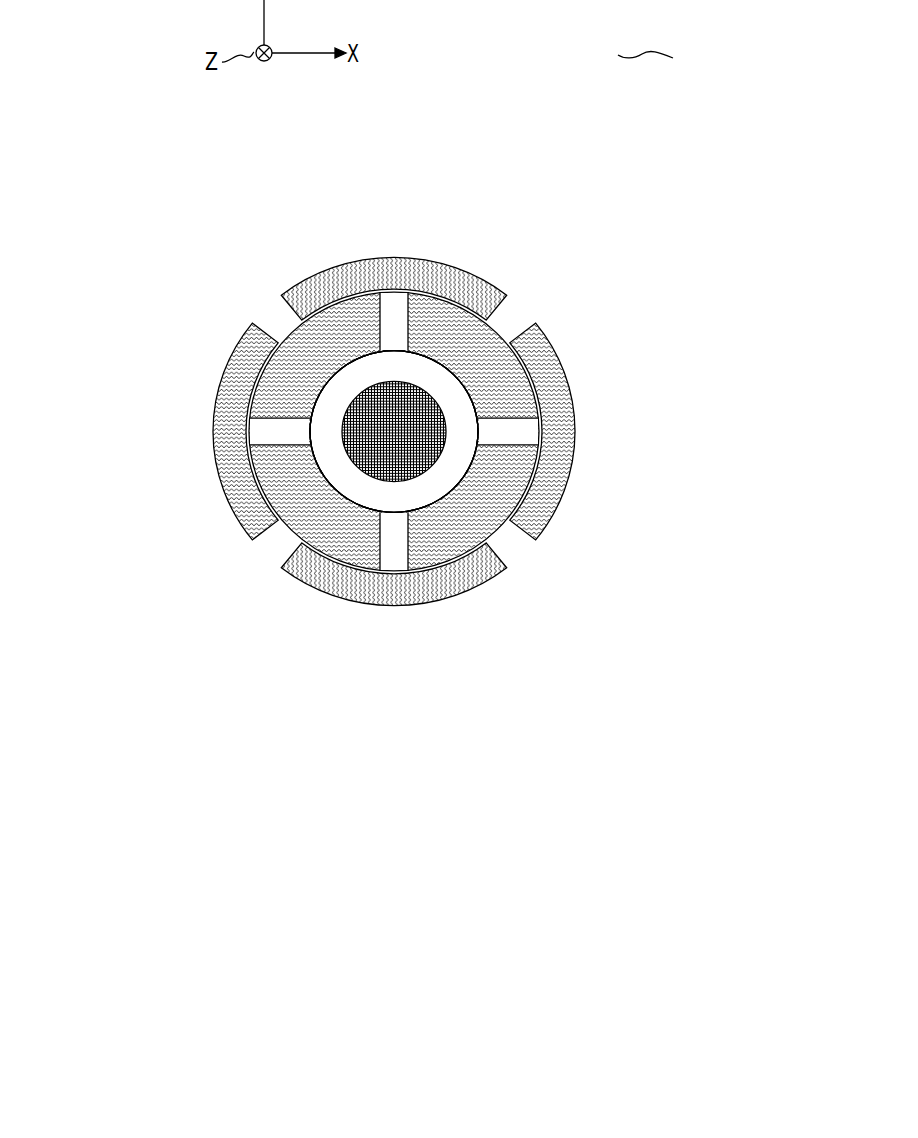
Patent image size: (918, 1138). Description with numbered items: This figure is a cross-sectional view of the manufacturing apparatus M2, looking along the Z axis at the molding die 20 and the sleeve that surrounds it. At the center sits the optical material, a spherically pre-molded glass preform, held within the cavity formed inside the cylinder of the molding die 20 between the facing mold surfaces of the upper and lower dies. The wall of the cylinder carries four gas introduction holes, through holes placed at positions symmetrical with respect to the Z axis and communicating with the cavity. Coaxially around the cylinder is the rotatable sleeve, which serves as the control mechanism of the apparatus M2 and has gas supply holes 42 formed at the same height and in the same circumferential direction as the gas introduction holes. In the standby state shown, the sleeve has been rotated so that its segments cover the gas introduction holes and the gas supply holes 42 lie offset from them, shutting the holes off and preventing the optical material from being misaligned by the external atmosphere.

The molding die 20 is at (519, 235).
The gas supply holes 42 is at (278, 317).
The manufacturing apparatus M2 is at (645, 39).